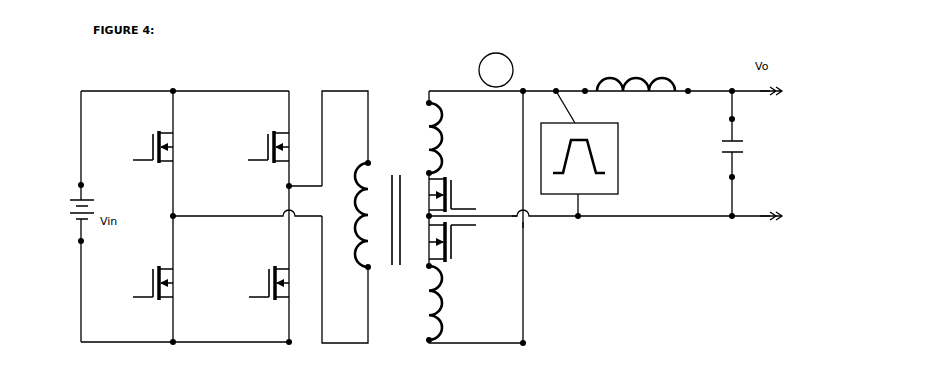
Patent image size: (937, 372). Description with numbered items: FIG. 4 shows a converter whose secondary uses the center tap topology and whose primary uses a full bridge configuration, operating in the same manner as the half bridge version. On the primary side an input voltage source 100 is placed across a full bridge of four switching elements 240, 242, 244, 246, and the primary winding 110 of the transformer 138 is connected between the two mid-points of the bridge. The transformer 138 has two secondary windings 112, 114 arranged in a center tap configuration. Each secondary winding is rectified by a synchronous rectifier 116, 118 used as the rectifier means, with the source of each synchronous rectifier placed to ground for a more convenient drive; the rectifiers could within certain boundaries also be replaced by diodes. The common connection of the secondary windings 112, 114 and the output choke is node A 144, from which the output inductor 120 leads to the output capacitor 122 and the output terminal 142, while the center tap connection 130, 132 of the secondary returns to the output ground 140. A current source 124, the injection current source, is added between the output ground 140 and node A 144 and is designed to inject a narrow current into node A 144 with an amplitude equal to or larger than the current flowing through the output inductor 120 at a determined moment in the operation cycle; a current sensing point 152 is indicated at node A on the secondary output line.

The input voltage source 100 is at (68, 202).
The primary winding 110 is at (365, 220).
The secondary winding 112 is at (447, 130).
The secondary winding 114 is at (448, 293).
The synchronous rectifier 116 is at (463, 193).
The synchronous rectifier 118 is at (466, 245).
The output inductor 120 is at (632, 75).
The output capacitor 122 is at (720, 135).
The current source 124 is at (620, 180).
The center tap connection 130 is at (526, 219).
The secondary return node 132 is at (525, 224).
The transformer 138 is at (398, 127).
The output ground 140 is at (740, 220).
The output terminal 142 is at (740, 96).
The node A 144 is at (524, 89).
The current sensing point 152 is at (498, 52).
The switch Q1 240 is at (263, 133).
The switch Q3 242 is at (142, 133).
The switch Q4 244 is at (152, 273).
The switch Q2 246 is at (267, 273).